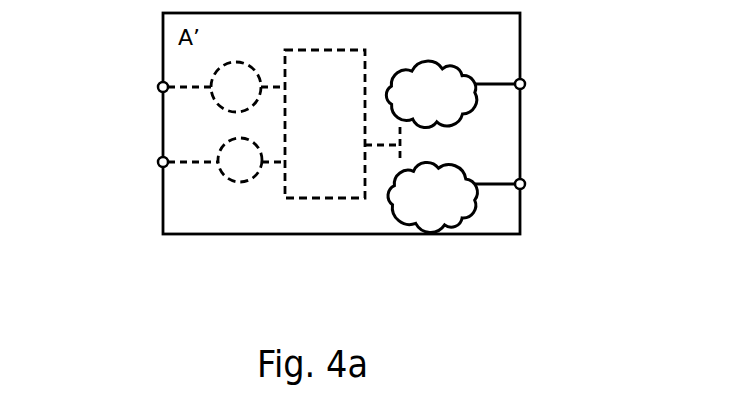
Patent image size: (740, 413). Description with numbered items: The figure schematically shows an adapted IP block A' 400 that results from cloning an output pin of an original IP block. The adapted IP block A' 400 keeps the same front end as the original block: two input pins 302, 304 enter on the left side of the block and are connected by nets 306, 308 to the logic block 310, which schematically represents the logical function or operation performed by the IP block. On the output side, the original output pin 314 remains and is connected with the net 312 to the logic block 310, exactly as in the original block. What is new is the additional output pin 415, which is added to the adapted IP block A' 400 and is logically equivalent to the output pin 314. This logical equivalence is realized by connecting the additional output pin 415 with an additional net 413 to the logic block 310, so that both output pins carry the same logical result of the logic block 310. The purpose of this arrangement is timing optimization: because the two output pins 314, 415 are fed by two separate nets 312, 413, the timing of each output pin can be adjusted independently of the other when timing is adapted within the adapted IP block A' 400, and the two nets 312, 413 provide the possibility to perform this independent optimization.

The input pin 302 is at (158, 87).
The input pin 304 is at (158, 163).
The net 306 is at (248, 65).
The net 308 is at (232, 181).
The logic block 310 is at (365, 63).
The net 312 is at (462, 66).
The additional net 413 is at (460, 166).
The output pin 314 is at (525, 88).
The additional output pin 415 is at (525, 188).
The adapted IP block A' 400 is at (521, 234).